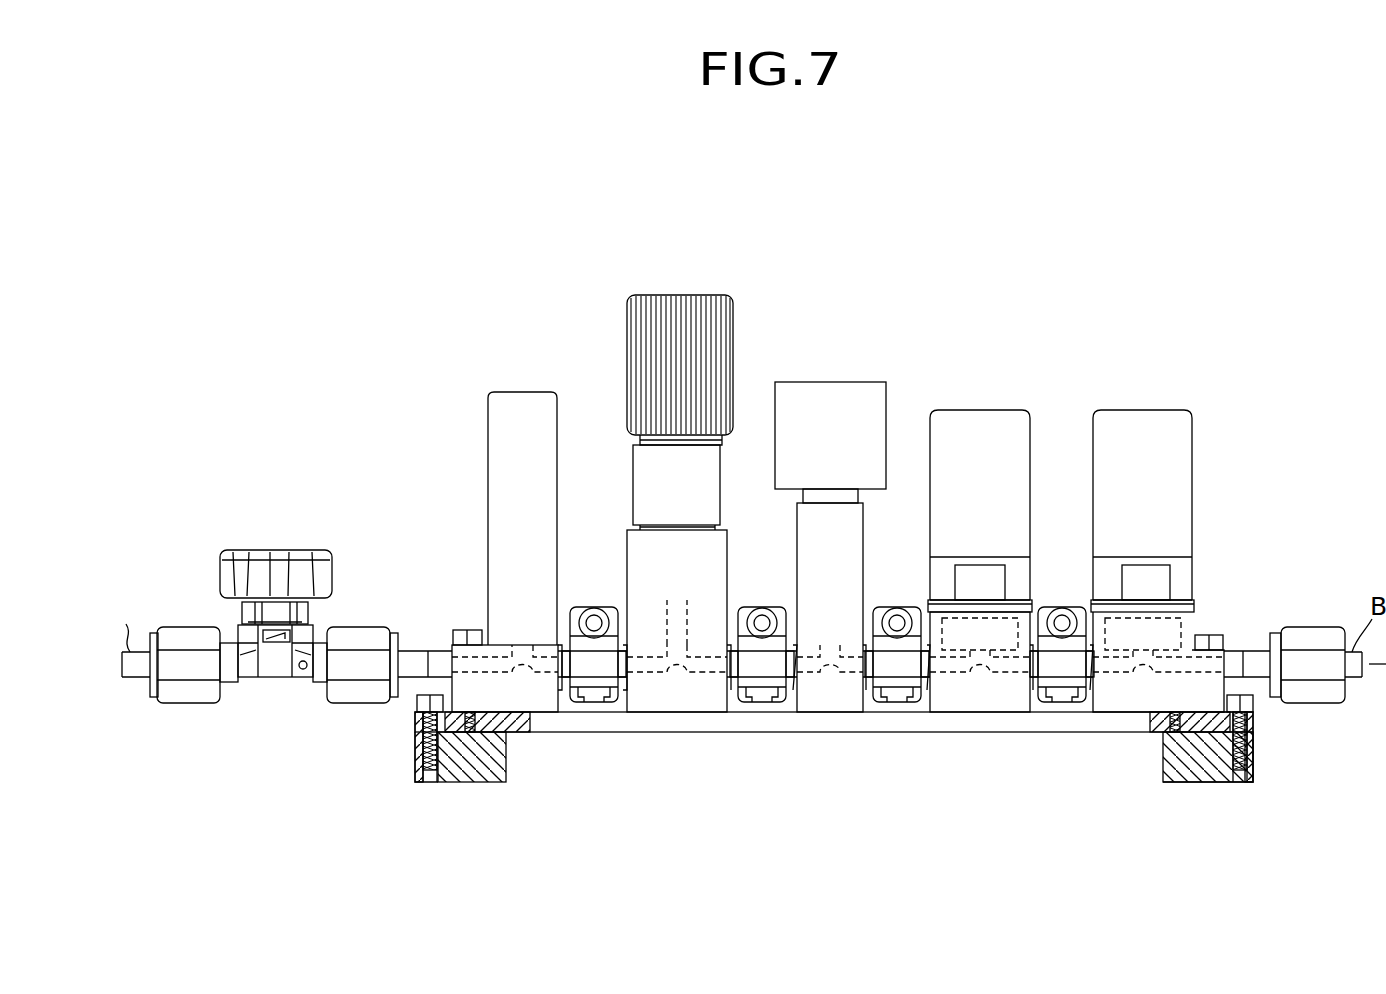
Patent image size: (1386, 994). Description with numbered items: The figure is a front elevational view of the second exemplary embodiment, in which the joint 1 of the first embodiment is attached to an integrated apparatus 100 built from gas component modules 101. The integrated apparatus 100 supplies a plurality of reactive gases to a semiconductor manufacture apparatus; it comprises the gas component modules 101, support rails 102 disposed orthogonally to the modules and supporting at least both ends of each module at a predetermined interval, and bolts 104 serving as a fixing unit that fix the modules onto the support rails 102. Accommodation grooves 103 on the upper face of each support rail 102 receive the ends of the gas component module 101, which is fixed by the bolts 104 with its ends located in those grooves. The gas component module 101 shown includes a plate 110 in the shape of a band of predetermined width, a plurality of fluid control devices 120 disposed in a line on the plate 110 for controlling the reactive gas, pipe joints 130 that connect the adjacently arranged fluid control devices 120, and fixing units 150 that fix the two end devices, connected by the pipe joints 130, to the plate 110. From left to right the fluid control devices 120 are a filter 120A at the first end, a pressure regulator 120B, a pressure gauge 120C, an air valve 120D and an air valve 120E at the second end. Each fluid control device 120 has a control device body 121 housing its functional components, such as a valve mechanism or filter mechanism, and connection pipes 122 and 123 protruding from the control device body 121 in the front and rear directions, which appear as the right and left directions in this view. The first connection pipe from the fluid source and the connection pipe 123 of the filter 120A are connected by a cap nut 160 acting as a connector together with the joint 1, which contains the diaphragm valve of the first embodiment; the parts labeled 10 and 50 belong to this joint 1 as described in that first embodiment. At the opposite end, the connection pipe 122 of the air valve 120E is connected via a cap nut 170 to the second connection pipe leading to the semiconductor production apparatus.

The joint 1 is at (323, 500).
The valve body 10 is at (247, 668).
The handle 50 is at (274, 552).
The integrated apparatus 100 is at (1143, 200).
The gas component module 101 is at (1034, 283).
The support rail 102 is at (461, 782).
The accommodation groove 103 is at (416, 722).
The bolt 104 is at (416, 700).
The plate 110 is at (1252, 725).
The fluid control device 120 is at (848, 440).
The filter 120A is at (522, 392).
The pressure regulator 120B is at (676, 300).
The pressure gauge 120C is at (832, 382).
The air valve 120D is at (976, 410).
The air valve 120E is at (1146, 410).
The control device body 121 is at (677, 700).
The connection pipe 122 is at (563, 686).
The connection pipe 123 is at (437, 650).
The pipe joint 130 is at (594, 608).
The fixing unit 150 is at (465, 630).
The cap nut 160 is at (185, 628).
The cap nut 170 is at (1330, 630).